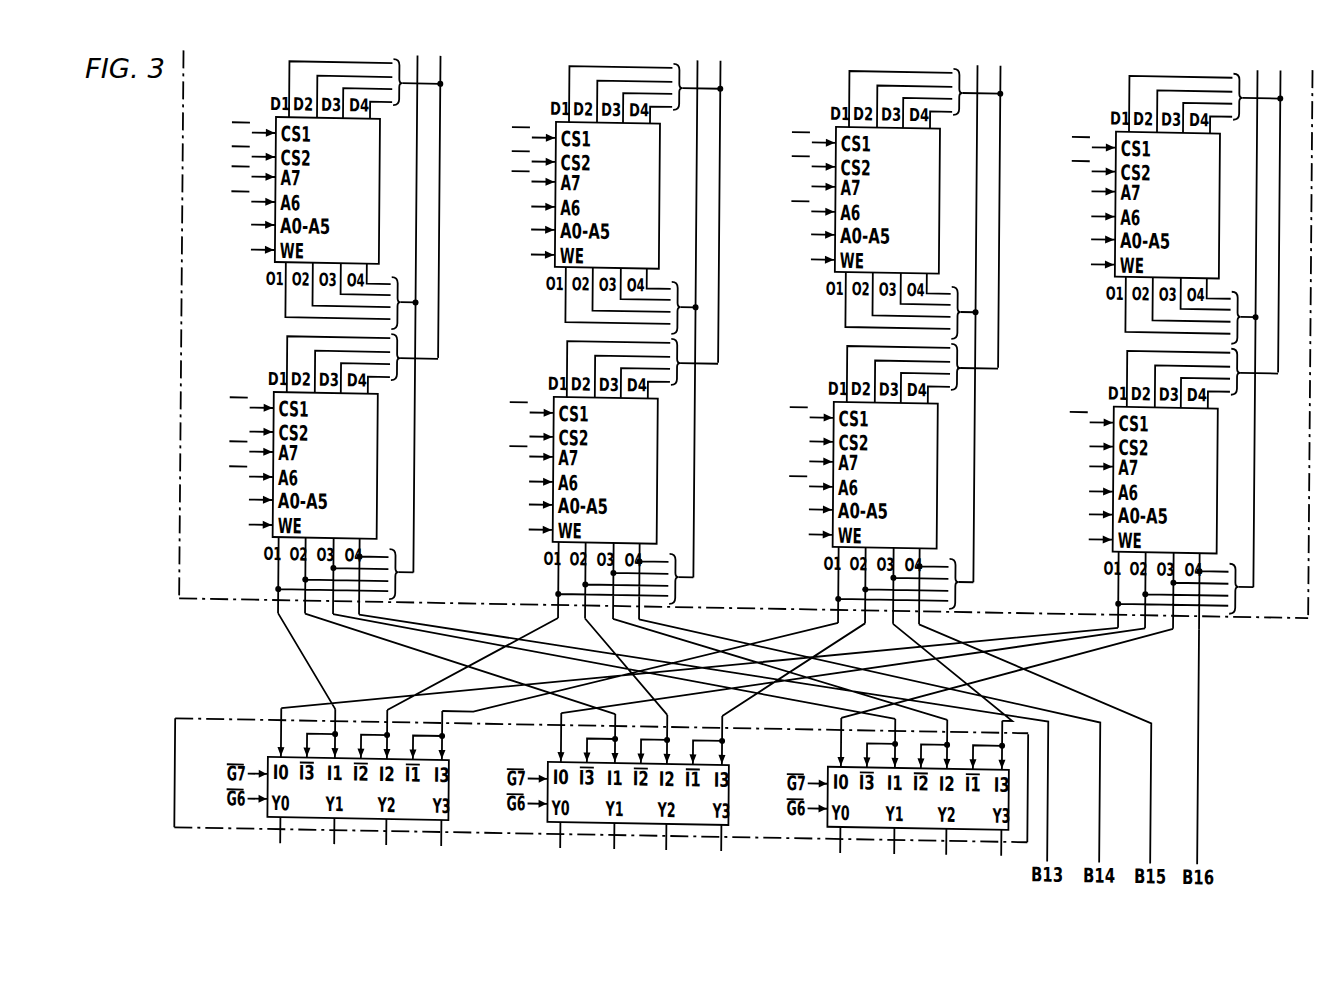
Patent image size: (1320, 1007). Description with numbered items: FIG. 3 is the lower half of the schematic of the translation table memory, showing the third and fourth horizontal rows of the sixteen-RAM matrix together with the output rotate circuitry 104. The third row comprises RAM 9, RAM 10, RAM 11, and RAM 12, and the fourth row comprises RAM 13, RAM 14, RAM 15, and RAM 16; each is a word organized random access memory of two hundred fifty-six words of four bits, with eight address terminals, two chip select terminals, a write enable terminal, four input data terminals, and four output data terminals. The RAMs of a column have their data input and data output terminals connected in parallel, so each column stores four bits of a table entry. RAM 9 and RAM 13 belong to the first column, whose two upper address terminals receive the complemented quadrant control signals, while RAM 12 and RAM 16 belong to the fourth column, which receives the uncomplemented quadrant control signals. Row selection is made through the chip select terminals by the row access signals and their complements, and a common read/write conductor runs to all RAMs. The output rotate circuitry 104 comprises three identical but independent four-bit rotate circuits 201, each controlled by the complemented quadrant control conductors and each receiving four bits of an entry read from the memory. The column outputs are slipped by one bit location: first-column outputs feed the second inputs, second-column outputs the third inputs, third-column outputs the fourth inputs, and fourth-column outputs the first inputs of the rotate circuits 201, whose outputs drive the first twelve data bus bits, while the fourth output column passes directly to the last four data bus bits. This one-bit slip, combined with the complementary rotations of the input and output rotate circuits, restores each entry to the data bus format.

The output rotate circuitry 104 is at (180, 770).
The 4-bit rotate circuit 201 is at (273, 757).
The RAM 9 is at (321, 193).
The RAM 10 is at (601, 198).
The RAM 11 is at (881, 203).
The RAM 12 is at (1161, 207).
The RAM 13 is at (318, 473).
The RAM 14 is at (598, 478).
The RAM 15 is at (878, 483).
The RAM 16 is at (1158, 487).